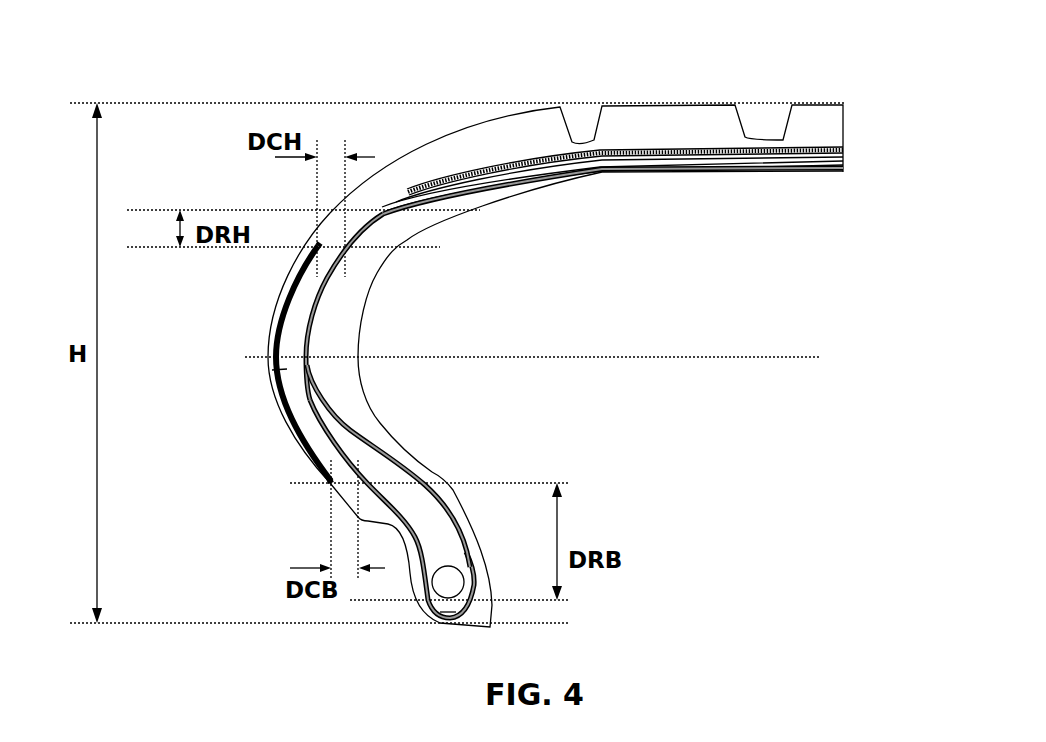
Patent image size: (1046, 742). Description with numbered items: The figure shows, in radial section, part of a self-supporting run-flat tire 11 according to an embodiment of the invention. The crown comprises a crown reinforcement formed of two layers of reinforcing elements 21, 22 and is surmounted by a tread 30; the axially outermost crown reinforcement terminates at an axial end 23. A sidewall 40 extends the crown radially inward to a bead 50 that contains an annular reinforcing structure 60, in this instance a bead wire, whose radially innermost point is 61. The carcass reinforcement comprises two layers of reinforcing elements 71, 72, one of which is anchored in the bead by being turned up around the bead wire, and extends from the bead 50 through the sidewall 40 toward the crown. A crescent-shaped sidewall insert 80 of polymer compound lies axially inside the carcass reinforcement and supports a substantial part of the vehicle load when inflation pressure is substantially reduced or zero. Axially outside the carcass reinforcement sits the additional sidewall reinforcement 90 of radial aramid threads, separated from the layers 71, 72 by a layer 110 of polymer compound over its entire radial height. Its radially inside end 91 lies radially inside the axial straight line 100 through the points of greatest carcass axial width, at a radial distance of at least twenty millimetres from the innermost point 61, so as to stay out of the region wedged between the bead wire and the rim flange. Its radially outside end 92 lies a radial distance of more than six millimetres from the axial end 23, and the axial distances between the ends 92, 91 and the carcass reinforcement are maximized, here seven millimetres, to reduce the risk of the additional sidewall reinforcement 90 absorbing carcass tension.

The tire 11 is at (305, 82).
The tread 30 is at (664, 120).
The layer of reinforcing elements 21 is at (456, 172).
The layer of reinforcing elements 22 is at (400, 204).
The axial end of the axially outermost crown reinforcement 23 is at (395, 222).
The sidewall 40 is at (270, 337).
The bead 50 is at (484, 588).
The annular reinforcing structure 60 is at (443, 586).
The radially innermost point of the annular reinforcing structure 61 is at (436, 609).
The layer of reinforcing elements 71 is at (410, 462).
The layer of reinforcing elements 72 is at (466, 552).
The sidewall insert 80 is at (352, 312).
The additional sidewall reinforcement 90 is at (287, 425).
The radially inside end of the additional sidewall reinforcement 91 is at (325, 494).
The radially outside end of the additional sidewall reinforcement 92 is at (312, 236).
The axial straight line 100 is at (655, 362).
The layer of polymer compound 110 is at (280, 370).